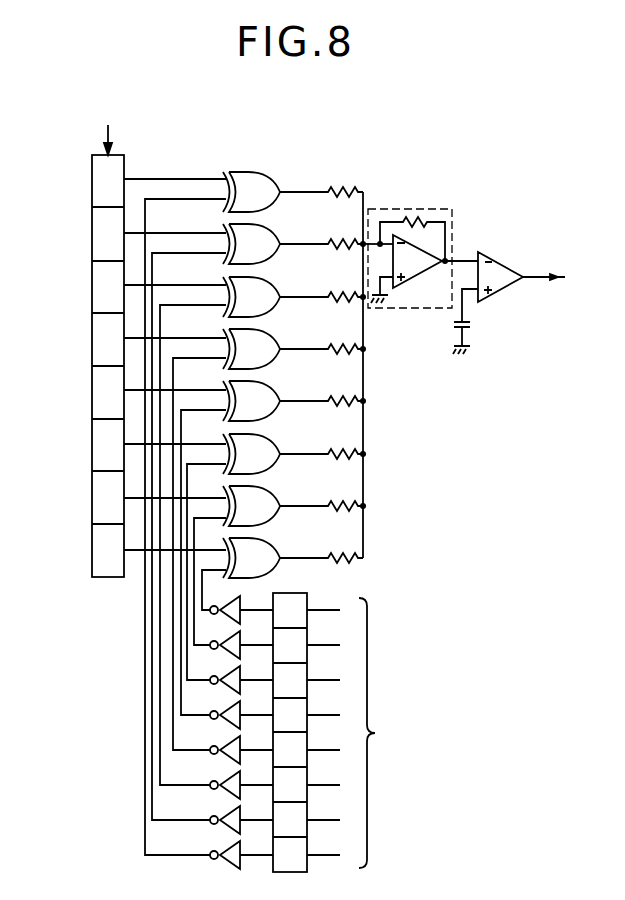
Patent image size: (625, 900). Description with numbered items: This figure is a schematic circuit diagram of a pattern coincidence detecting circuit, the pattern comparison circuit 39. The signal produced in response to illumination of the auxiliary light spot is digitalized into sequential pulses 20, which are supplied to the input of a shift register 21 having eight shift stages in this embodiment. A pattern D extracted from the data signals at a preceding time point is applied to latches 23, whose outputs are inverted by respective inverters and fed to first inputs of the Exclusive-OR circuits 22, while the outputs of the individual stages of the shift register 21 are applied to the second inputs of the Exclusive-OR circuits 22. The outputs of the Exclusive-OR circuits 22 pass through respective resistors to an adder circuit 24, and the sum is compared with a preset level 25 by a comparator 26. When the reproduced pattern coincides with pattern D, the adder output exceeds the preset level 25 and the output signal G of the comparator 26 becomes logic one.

The pulses 20 is at (110, 130).
The shift register 21 is at (92, 183).
The Exclusive-OR circuits 22 is at (266, 176).
The latches 23 is at (312, 602).
The adder circuit 24 is at (452, 228).
The preset level 25 is at (478, 327).
The comparator 26 is at (500, 262).
The pattern comparison circuit 39 is at (573, 408).